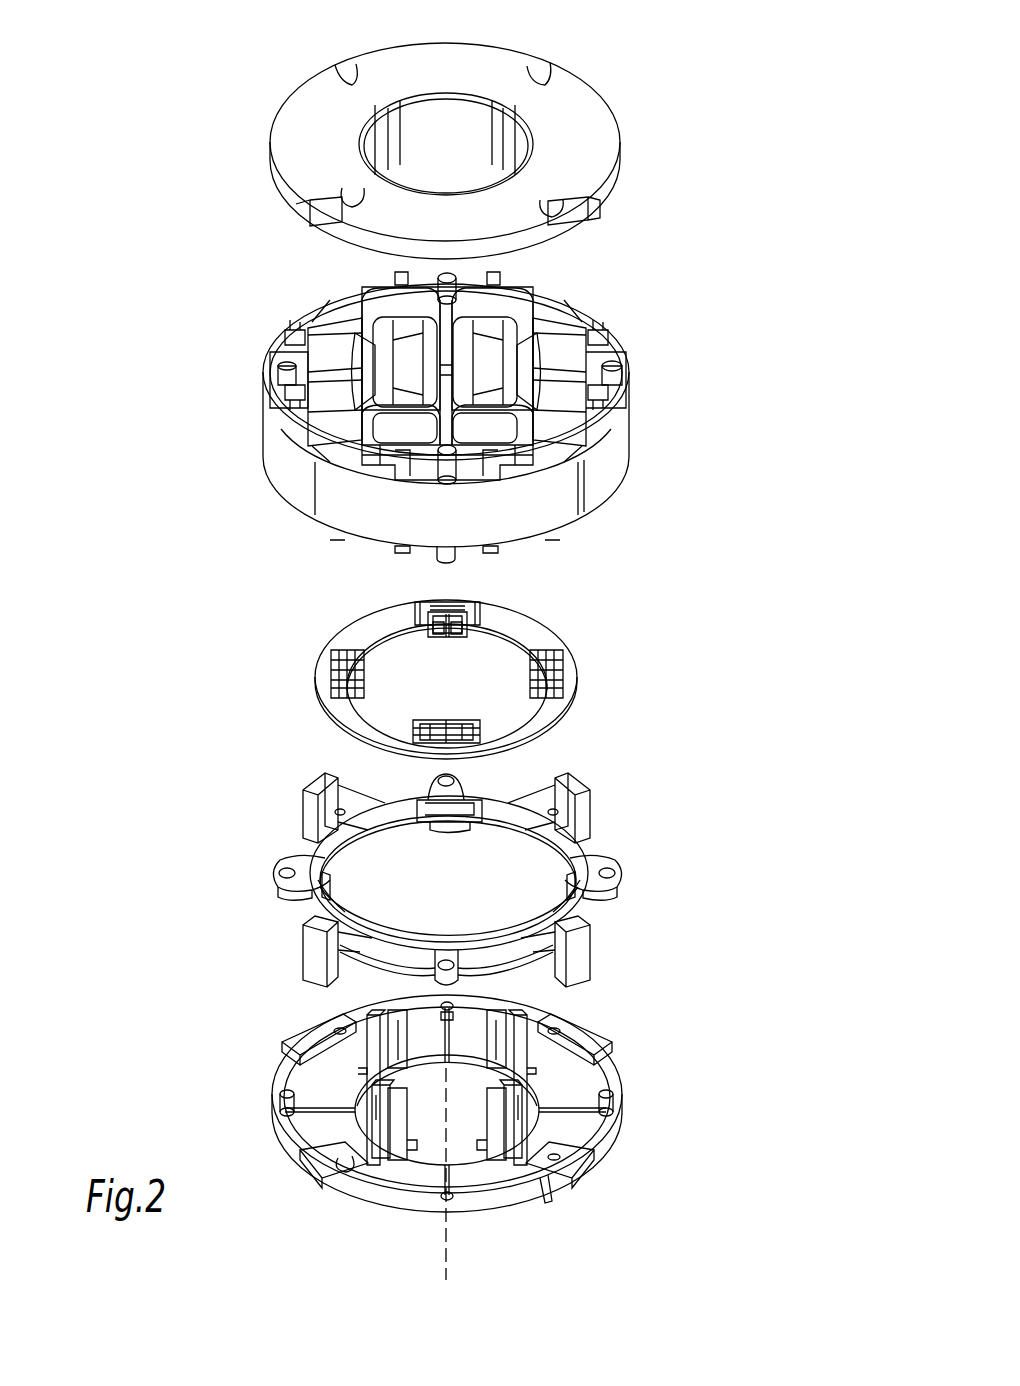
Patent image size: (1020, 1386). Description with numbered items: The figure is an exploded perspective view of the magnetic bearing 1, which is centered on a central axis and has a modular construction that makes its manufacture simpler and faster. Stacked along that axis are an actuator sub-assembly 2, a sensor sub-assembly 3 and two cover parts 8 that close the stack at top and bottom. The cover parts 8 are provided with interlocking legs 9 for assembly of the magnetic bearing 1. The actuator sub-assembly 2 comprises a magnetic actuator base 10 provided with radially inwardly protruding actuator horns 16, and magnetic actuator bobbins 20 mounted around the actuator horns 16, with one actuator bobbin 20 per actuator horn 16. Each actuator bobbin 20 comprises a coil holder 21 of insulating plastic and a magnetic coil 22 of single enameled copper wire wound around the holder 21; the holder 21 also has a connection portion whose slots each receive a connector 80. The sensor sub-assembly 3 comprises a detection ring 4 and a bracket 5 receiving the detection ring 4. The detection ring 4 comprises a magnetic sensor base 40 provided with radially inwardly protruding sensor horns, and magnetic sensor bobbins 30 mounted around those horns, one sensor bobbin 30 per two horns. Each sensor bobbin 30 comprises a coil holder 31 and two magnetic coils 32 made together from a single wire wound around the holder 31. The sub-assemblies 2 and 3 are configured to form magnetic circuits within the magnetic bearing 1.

The magnetic bearing 1 is at (122, 128).
The actuator sub-assembly 2 is at (237, 430).
The sensor sub-assembly 3 is at (190, 745).
The detection ring 4 is at (600, 660).
The bracket 5 is at (640, 836).
The cover parts 8 is at (247, 158).
The interlocking legs 9 is at (398, 146).
The magnetic actuator base 10 is at (598, 480).
The actuator horns 16 is at (480, 355).
The magnetic actuator bobbins 20 is at (603, 302).
The coil holder 21 is at (612, 346).
The magnetic coil 22 is at (612, 394).
The magnetic sensor bobbins 30 is at (420, 590).
The coil holder 31 is at (500, 620).
The magnetic coils 32 is at (435, 634).
The magnetic sensor base 40 is at (540, 710).
The connector 80 is at (605, 340).